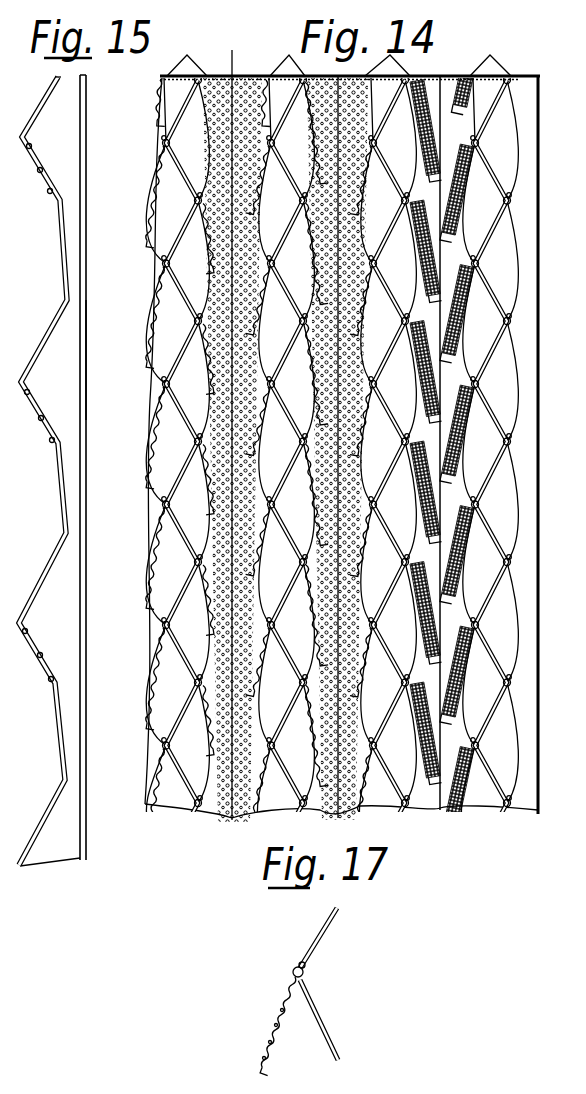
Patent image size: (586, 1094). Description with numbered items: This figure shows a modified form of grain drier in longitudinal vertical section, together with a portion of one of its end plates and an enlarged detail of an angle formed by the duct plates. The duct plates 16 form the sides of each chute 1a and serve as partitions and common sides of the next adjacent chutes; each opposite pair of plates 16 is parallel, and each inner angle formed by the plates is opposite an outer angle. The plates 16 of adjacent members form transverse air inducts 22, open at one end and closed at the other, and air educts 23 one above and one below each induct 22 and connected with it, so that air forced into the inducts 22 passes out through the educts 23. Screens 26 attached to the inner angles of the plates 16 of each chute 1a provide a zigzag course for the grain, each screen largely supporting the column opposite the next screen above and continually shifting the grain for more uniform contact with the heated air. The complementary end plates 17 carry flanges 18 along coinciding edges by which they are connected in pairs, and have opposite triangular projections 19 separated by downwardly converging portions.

In FIG. 14, the chute 1a is at (333, 829).
In FIG. 14, the duct plates 16 is at (183, 226).
In FIG. 17, the duct plates 16 is at (319, 938).
In FIG. 15, the end plates 17 is at (64, 160).
In FIG. 15, the flanges 18 is at (86, 356).
In FIG. 15, the triangular projections 19 is at (43, 471).
In FIG. 14, the air inducts 22 is at (321, 454).
In FIG. 14, the air educts 23 is at (350, 441).
In FIG. 14, the screens 26 is at (161, 108).
In FIG. 17, the screens 26 is at (278, 1013).